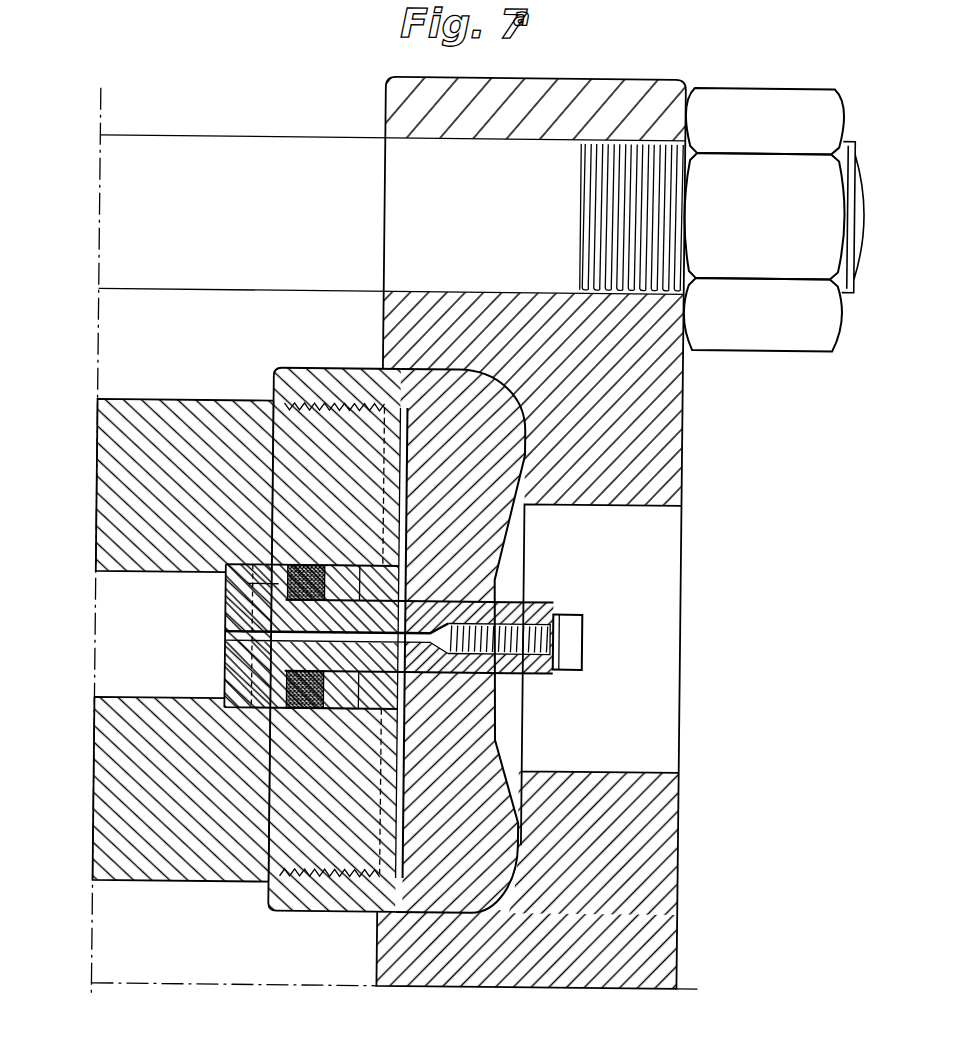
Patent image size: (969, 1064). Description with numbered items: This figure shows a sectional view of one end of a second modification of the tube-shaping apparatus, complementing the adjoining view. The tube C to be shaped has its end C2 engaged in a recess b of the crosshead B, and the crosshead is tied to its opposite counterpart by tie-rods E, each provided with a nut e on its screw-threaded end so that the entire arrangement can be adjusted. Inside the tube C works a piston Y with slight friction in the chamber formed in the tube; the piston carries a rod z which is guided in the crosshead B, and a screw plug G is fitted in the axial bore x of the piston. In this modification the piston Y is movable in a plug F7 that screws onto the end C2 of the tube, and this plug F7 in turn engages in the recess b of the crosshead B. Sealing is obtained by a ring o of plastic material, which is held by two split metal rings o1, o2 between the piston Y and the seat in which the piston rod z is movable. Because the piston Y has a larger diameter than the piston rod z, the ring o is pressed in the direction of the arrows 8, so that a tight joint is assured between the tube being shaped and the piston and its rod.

The tie-rod E is at (258, 152).
The crosshead B is at (652, 456).
The nut e is at (765, 331).
The tube C is at (112, 464).
The end of the tube C2 is at (306, 436).
The plug F7 is at (483, 572).
The recess b is at (523, 522).
The piston Y is at (229, 660).
The arrows 8 is at (265, 578).
The ring of plastic material o is at (316, 708).
The split metal ring o1 is at (343, 708).
The split metal ring o2 is at (292, 708).
The screw plug G is at (550, 635).
The axial bore x is at (413, 636).
The piston rod z is at (430, 668).